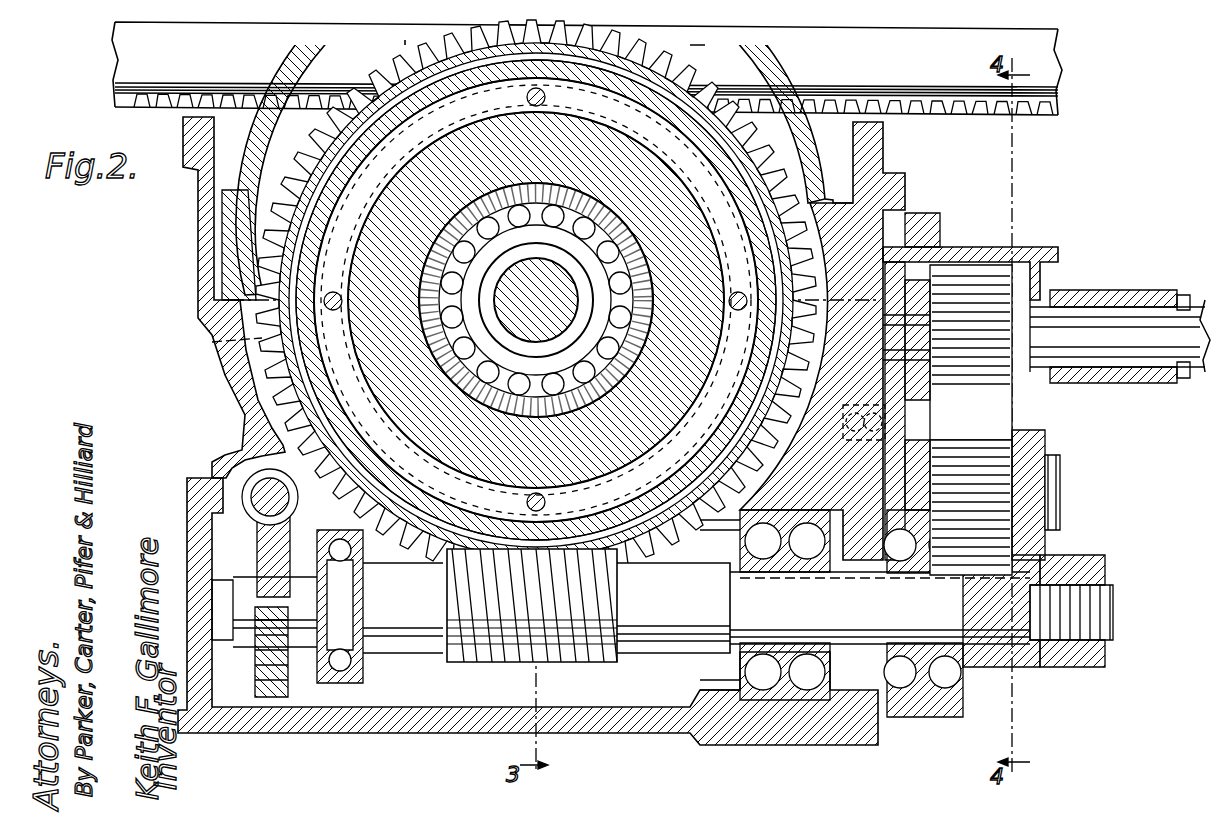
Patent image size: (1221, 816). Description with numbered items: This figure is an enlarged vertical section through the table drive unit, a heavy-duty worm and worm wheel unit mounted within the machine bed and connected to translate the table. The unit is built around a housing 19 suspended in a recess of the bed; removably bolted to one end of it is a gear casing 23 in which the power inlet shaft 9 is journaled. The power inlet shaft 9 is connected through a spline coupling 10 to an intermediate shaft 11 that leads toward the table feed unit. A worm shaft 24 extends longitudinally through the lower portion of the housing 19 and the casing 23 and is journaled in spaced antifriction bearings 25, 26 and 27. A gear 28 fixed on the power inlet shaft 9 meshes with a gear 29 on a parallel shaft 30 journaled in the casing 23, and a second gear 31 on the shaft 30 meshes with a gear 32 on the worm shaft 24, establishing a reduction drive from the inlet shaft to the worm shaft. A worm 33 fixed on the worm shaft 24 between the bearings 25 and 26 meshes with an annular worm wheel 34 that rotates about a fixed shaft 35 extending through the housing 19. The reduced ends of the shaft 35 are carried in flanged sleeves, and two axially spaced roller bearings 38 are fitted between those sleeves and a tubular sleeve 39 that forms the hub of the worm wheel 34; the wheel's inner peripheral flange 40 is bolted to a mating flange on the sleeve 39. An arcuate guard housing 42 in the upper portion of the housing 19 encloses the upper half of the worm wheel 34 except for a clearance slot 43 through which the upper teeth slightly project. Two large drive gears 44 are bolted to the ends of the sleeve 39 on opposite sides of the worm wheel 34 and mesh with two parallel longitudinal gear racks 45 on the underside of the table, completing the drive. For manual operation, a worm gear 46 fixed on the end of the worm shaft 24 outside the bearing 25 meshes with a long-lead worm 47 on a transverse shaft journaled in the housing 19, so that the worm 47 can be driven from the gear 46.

The power inlet shaft 9 is at (1088, 316).
The spline coupling 10 is at (1132, 292).
The intermediate shaft 11 is at (1185, 296).
The housing 19 is at (624, 733).
The gear casing 23 is at (962, 246).
The worm shaft 24 is at (662, 650).
The antifriction bearing 25 is at (366, 664).
The antifriction bearing 26 is at (752, 672).
The antifriction bearing 27 is at (1040, 660).
The gear 28 is at (985, 316).
The gear 29 is at (1000, 477).
The parallel shaft 30 is at (1060, 486).
The second gear 31 is at (938, 432).
The gear 32 is at (932, 718).
The worm 33 is at (568, 652).
The worm wheel 34 is at (770, 170).
The fixed shaft 35 is at (544, 268).
The roller bearings 38 is at (462, 262).
The tubular sleeve 39 is at (583, 427).
The inner peripheral flange 40 is at (728, 205).
The guard housing 42 is at (232, 226).
The clearance slot 43 is at (400, 46).
The drive gears 44 is at (235, 348).
The gear racks 45 is at (1060, 99).
The worm gear 46 is at (258, 690).
The worm 47 is at (250, 478).